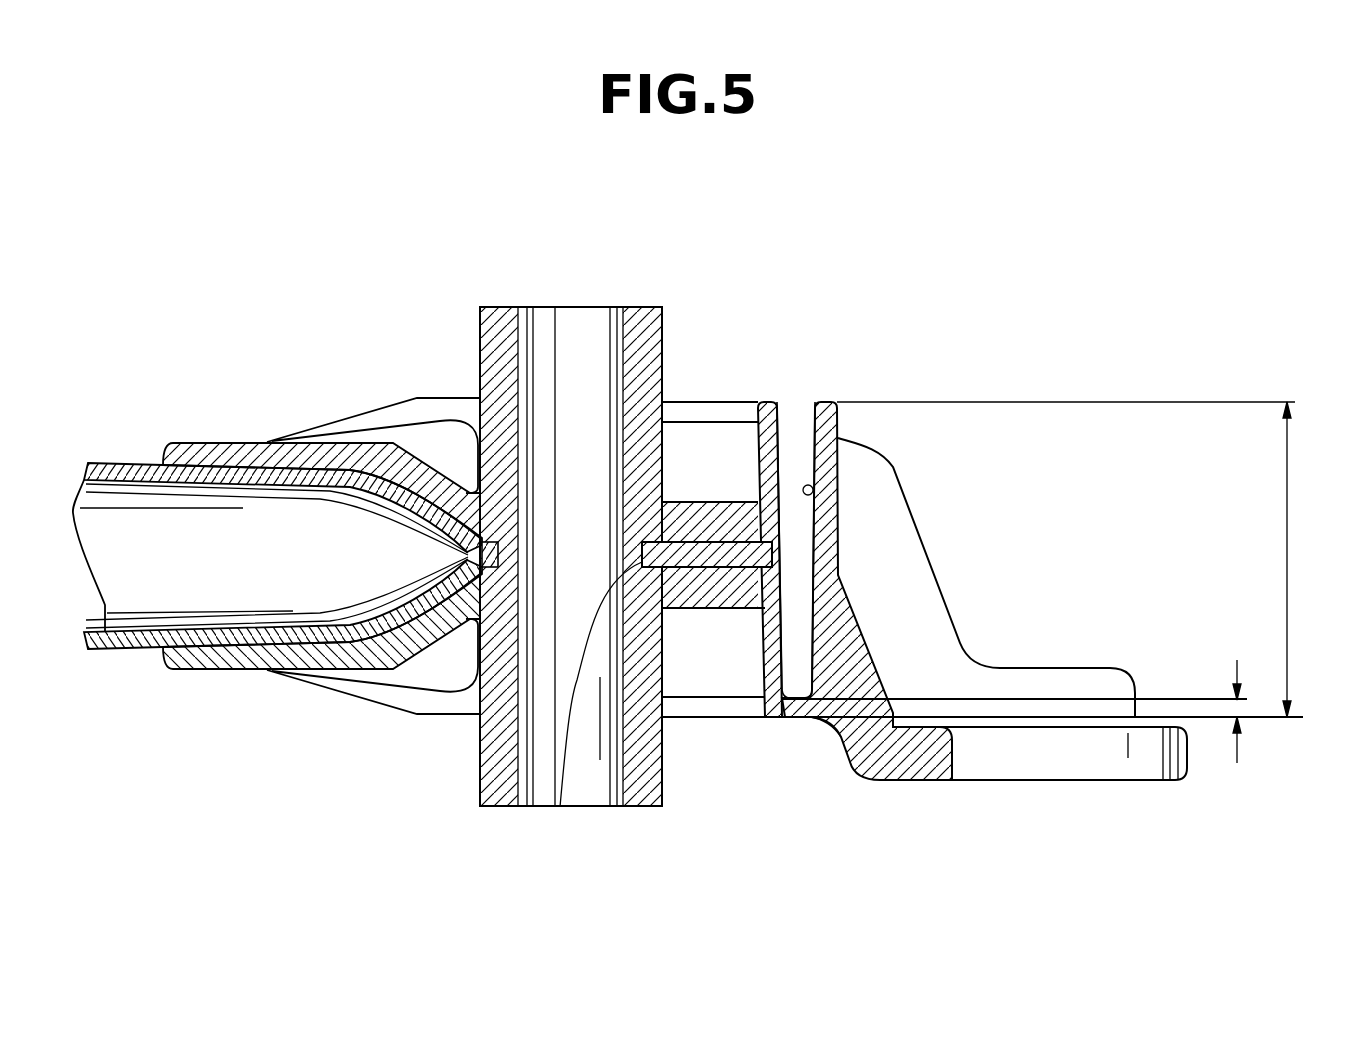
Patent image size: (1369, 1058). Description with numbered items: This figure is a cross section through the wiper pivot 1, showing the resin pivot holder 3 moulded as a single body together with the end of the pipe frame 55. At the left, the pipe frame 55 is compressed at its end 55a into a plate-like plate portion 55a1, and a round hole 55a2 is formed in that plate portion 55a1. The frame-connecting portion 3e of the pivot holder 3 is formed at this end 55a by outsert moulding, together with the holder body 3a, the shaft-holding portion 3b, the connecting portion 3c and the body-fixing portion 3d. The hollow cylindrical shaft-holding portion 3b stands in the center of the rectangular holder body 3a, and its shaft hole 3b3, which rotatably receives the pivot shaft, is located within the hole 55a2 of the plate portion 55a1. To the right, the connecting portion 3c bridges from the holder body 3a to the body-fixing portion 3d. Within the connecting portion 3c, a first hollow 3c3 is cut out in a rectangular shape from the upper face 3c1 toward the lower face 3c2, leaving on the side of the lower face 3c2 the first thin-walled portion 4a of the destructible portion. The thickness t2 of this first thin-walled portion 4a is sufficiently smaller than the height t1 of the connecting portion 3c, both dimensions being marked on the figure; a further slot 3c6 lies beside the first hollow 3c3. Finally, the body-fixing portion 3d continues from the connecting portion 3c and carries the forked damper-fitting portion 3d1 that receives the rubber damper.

The wiper pivot 1 is at (660, 307).
The pivot holder 3 is at (706, 402).
The holder body 3a is at (693, 718).
The shaft-holding portion 3b is at (480, 350).
The shaft hole 3b3 is at (623, 770).
The connecting portion 3c is at (822, 403).
The upper face 3c1 is at (772, 403).
The lower face 3c2 is at (813, 723).
The first hollow 3c3 is at (808, 485).
The slot between walls 3c6 is at (797, 403).
The body-fixing portion 3d is at (1090, 668).
The damper-fitting portion 3d1 is at (1067, 768).
The frame-connecting portion 3e is at (244, 443).
The first thin-walled portion 4a is at (797, 717).
The pipe frame 55 is at (110, 463).
The end of the pipe frame 55a is at (303, 648).
The plate portion 55a1 is at (478, 620).
The round hole 55a2 is at (560, 807).
The height of the connecting portion t1 is at (1287, 565).
The thickness of the first thin-walled portion t2 is at (1237, 705).